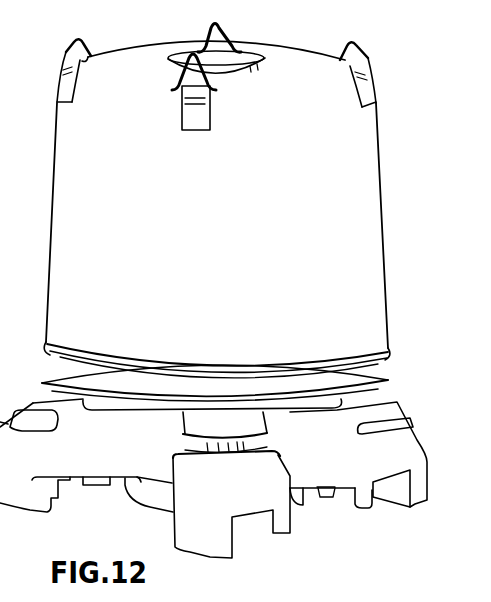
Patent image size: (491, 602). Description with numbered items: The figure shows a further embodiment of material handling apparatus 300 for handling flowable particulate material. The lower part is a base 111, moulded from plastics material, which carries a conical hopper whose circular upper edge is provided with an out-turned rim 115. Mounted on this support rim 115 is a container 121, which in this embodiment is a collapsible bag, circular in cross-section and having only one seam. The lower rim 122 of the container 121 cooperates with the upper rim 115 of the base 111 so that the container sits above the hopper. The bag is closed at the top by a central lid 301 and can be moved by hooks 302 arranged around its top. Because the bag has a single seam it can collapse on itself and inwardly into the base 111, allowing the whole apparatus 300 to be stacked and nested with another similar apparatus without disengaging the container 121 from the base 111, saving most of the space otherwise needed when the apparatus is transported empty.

The material handling apparatus 300 is at (258, 198).
The container 121 is at (228, 267).
The lower rim 122 is at (391, 347).
The central lid 301 is at (254, 45).
The hooks 302 is at (369, 85).
The rim 115 is at (389, 387).
The base 111 is at (433, 482).